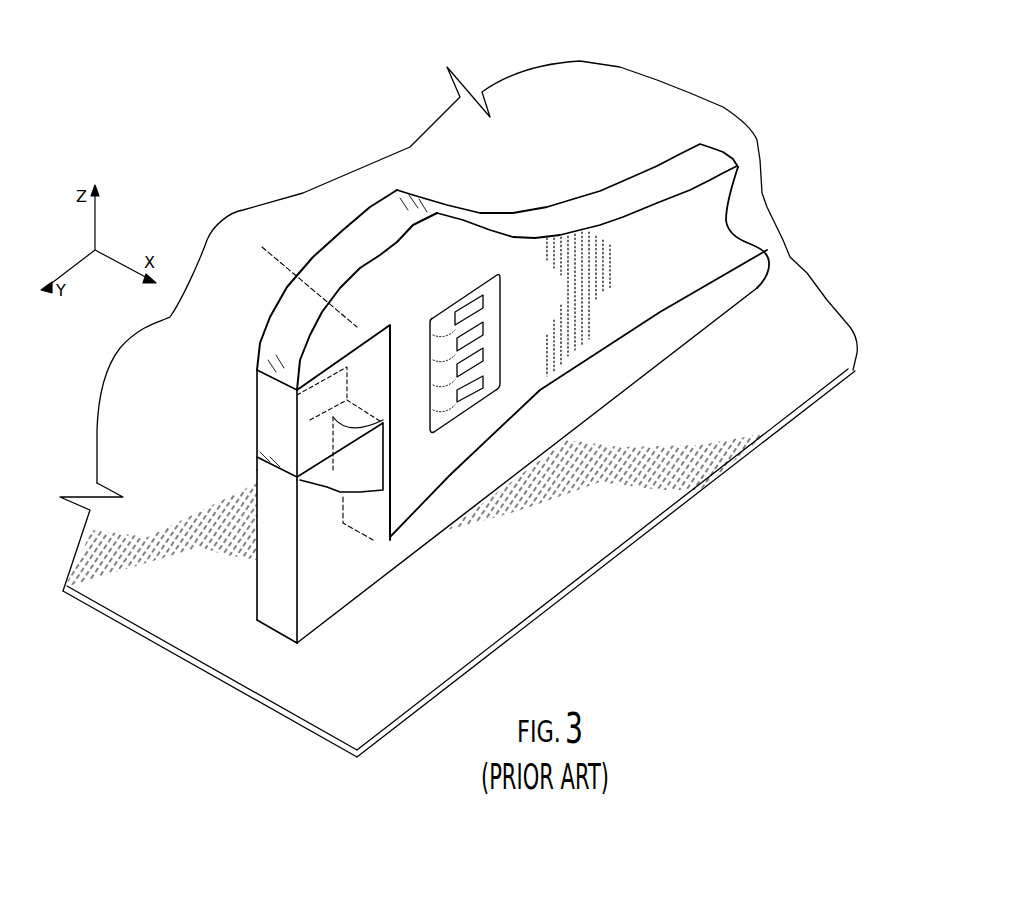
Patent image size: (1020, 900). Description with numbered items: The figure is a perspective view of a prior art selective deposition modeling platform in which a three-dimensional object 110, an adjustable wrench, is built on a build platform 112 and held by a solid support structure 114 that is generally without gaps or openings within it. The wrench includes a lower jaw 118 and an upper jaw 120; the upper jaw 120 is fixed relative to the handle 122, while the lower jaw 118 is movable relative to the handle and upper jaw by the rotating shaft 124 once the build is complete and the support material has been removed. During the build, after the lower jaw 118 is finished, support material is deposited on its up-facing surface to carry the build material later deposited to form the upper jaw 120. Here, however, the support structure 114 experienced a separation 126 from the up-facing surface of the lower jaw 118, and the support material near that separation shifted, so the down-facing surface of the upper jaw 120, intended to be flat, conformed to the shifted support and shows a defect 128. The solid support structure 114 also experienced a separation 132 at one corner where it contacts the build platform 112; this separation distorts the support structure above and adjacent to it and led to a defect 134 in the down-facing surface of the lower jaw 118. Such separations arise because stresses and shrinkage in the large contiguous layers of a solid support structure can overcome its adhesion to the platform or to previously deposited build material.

The three-dimensional object 110 is at (687, 213).
The build platform 112 is at (797, 297).
The solid support structure 114 is at (497, 300).
The lower jaw 118 is at (330, 452).
The upper jaw 120 is at (262, 247).
The handle 122 is at (710, 225).
The rotating shaft 124 is at (462, 335).
The separation 126 is at (335, 448).
The defect 128 is at (317, 372).
The separation 132 is at (305, 616).
The defect 134 is at (265, 560).